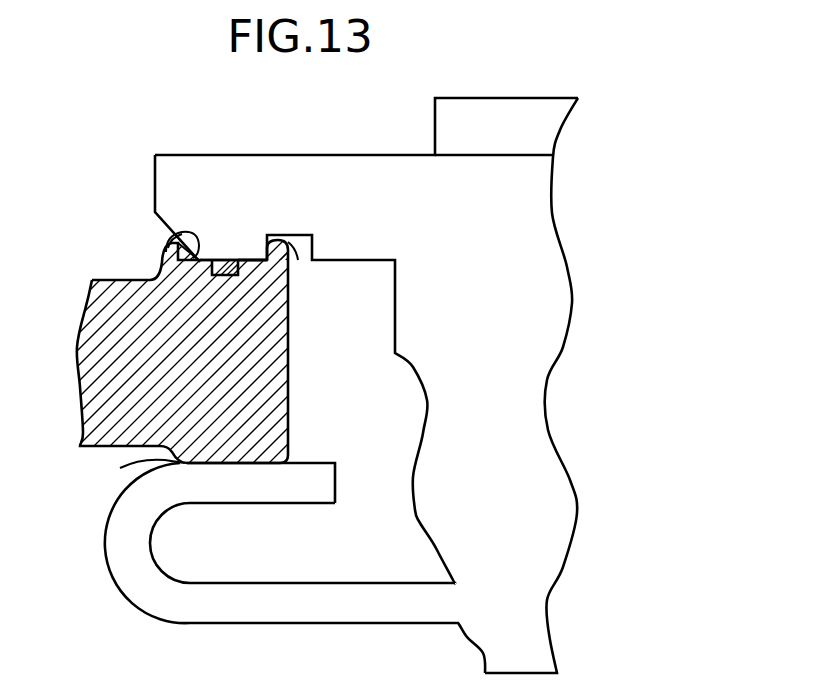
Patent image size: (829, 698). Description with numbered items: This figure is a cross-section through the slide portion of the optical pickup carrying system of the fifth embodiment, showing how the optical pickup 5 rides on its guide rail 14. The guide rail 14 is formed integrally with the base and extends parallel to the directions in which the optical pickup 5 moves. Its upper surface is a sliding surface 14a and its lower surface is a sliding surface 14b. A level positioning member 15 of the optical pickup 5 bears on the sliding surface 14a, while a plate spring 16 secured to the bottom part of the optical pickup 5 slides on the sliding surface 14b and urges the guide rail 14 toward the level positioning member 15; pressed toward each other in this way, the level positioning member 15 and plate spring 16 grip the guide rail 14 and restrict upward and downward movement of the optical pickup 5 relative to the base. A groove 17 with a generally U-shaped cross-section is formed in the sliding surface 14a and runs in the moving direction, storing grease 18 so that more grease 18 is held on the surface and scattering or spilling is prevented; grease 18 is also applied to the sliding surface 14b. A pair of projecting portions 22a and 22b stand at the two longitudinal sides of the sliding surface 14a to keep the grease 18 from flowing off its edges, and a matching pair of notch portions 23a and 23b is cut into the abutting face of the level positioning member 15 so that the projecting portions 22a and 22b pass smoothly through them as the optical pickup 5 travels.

The optical pickup 5 is at (490, 325).
The guide rail 14 is at (268, 397).
The sliding surface 14a is at (245, 255).
The sliding surface 14b is at (233, 463).
The level positioning member 15 is at (173, 293).
The plate spring 16 is at (312, 472).
The groove 17 is at (228, 255).
The grease 18 is at (178, 236).
The projecting portion 22a is at (162, 246).
The projecting portion 22b is at (287, 258).
The notch portion 23a is at (160, 227).
The notch portion 23b is at (290, 240).